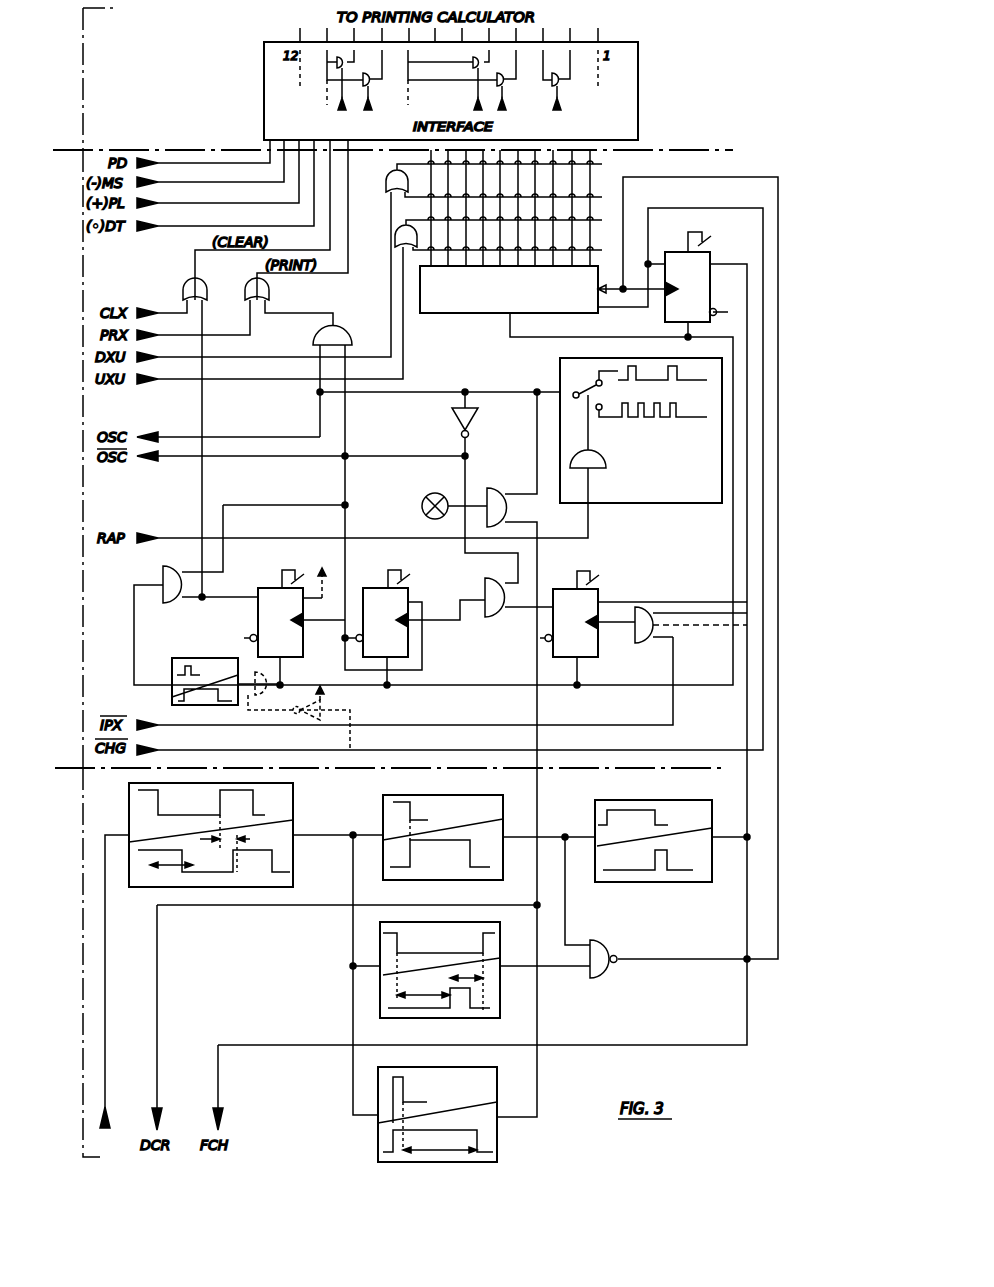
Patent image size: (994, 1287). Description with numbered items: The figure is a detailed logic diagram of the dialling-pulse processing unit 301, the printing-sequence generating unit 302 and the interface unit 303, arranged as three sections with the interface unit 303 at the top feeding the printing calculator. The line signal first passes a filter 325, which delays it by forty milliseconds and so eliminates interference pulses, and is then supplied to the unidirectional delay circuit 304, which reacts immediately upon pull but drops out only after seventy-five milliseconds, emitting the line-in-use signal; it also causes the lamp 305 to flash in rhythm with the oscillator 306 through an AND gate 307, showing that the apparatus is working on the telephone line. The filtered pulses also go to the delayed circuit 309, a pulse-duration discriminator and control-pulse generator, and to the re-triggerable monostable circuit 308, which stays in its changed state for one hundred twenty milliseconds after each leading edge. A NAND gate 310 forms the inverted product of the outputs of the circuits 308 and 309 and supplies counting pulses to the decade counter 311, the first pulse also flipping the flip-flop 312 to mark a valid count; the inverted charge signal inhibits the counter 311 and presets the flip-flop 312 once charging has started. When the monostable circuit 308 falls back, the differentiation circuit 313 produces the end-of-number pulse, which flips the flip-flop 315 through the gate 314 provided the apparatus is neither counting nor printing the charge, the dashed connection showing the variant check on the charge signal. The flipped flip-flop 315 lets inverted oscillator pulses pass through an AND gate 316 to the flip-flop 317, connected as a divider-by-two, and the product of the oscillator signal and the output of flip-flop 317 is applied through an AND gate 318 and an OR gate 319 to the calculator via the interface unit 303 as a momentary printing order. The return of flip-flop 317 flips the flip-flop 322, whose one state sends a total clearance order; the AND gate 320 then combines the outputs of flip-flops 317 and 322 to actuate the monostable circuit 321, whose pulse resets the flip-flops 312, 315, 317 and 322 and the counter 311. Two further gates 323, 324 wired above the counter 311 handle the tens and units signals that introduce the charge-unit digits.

The dialling-pulse processing unit 301 is at (81, 929).
The printing-sequence generating unit 302 is at (81, 437).
The interface unit 303 is at (81, 107).
The unidirectional delay circuit 304 is at (492, 1128).
The lamp 305 is at (422, 506).
The oscillator 306 is at (672, 503).
The AND gate 307 is at (489, 494).
The re-triggerable monostable circuit 308 is at (448, 808).
The delayed circuit 309 is at (461, 1011).
The NAND gate 310 is at (606, 976).
The decade counter 311 is at (434, 313).
The flip-flop 312 is at (702, 296).
The differentiation circuit 313 is at (660, 882).
The gate 314 is at (638, 635).
The flip-flop 315 is at (596, 600).
The AND gate 316 is at (491, 611).
The flip-flop 317 is at (400, 599).
The AND gate 318 is at (335, 333).
The OR gate 319 is at (270, 292).
The AND gate 320 is at (165, 577).
The monostable circuit 321 is at (216, 659).
The flip-flop 322 is at (257, 621).
The OR gate 323 is at (387, 182).
The OR gate 324 is at (396, 236).
The filter 325 is at (289, 803).